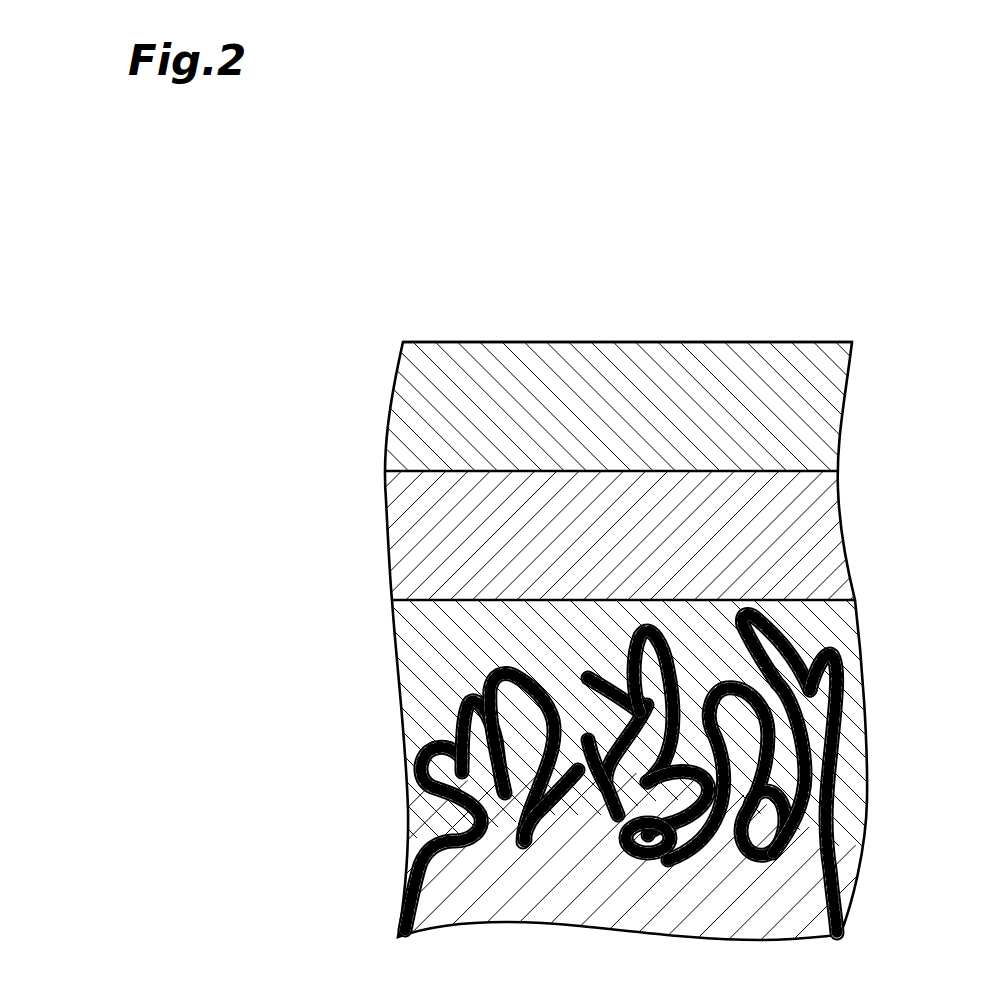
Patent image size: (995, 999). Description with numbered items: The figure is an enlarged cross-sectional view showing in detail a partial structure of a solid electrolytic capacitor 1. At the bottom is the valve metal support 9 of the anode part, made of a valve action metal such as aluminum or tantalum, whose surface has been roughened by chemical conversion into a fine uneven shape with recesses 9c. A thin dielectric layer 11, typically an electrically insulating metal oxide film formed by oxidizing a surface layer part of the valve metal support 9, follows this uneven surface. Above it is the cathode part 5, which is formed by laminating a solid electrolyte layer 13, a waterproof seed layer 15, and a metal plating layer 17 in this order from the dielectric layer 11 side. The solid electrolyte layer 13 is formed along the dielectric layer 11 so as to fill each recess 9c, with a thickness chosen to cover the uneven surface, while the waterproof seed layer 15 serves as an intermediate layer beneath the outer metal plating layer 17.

The solid electrolytic capacitor 1 is at (790, 297).
The cathode part 5 is at (489, 341).
The metal plating layer 17 is at (400, 430).
The waterproof seed layer 15 is at (400, 527).
The solid electrolyte layer 13 is at (410, 663).
The valve metal support 9 is at (518, 912).
The recess 9c is at (648, 848).
The dielectric layer 11 is at (773, 862).